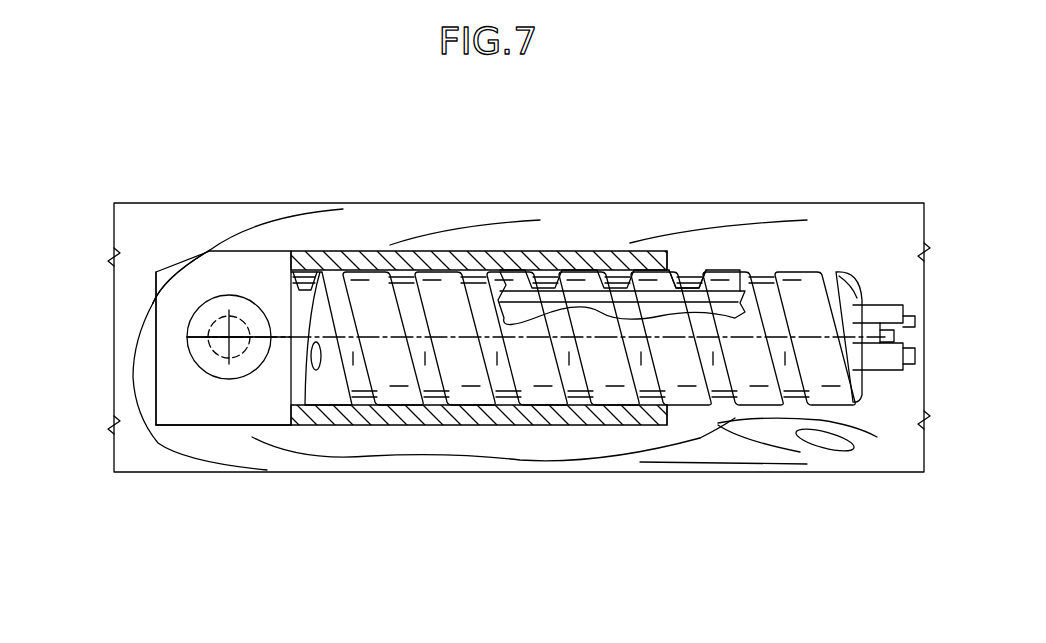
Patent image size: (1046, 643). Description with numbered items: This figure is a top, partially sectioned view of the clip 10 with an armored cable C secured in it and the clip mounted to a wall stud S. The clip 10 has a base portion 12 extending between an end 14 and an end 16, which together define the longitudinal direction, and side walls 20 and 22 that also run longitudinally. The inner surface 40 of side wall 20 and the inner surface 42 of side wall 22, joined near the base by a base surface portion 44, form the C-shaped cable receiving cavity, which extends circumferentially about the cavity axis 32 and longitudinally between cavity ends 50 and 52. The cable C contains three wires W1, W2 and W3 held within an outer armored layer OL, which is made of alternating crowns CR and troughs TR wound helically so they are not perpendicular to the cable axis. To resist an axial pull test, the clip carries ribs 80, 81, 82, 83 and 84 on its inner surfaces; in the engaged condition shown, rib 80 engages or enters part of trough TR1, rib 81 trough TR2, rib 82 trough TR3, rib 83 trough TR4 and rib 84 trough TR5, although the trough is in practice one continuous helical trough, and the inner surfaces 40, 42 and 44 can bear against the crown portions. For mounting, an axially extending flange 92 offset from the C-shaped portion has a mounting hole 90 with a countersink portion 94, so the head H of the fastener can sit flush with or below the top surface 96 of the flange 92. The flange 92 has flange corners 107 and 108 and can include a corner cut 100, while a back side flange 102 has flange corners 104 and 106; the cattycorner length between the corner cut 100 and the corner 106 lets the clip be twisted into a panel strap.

The clip 10 is at (651, 225).
The base portion 12 is at (258, 238).
The end 14 is at (157, 332).
The end 16 is at (688, 271).
The side wall 20 is at (510, 250).
The side wall 22 is at (514, 425).
The cavity axis 32 is at (768, 280).
The inner surface 40 is at (440, 250).
The inner surface 42 is at (400, 412).
The base surface portion 44 is at (291, 317).
The cavity end 50 is at (287, 378).
The cavity end 52 is at (668, 407).
The rib 80 is at (326, 256).
The rib 81 is at (408, 258).
The rib 82 is at (477, 252).
The rib 83 is at (547, 272).
The rib 84 is at (619, 272).
The mounting hole 90 is at (190, 357).
The flange 92 is at (187, 428).
The countersink portion 94 is at (197, 310).
The top surface 96 is at (203, 407).
The corner cut 100 is at (197, 307).
The back side flange 102 is at (647, 422).
The flange corner 104 is at (672, 268).
The flange corner 106 is at (657, 420).
The flange corner 107 is at (157, 300).
The flange corner 108 is at (157, 427).
The head H is at (197, 323).
The cable C is at (820, 264).
The crown CR is at (795, 272).
The trough TR is at (703, 270).
The trough TR1 is at (353, 398).
The trough TR2 is at (428, 400).
The trough TR3 is at (503, 400).
The trough TR4 is at (567, 350).
The trough TR5 is at (682, 408).
The wire W1 is at (913, 313).
The wire W2 is at (885, 332).
The wire W3 is at (908, 372).
The outer armored layer OL is at (765, 413).
The stud S is at (857, 458).